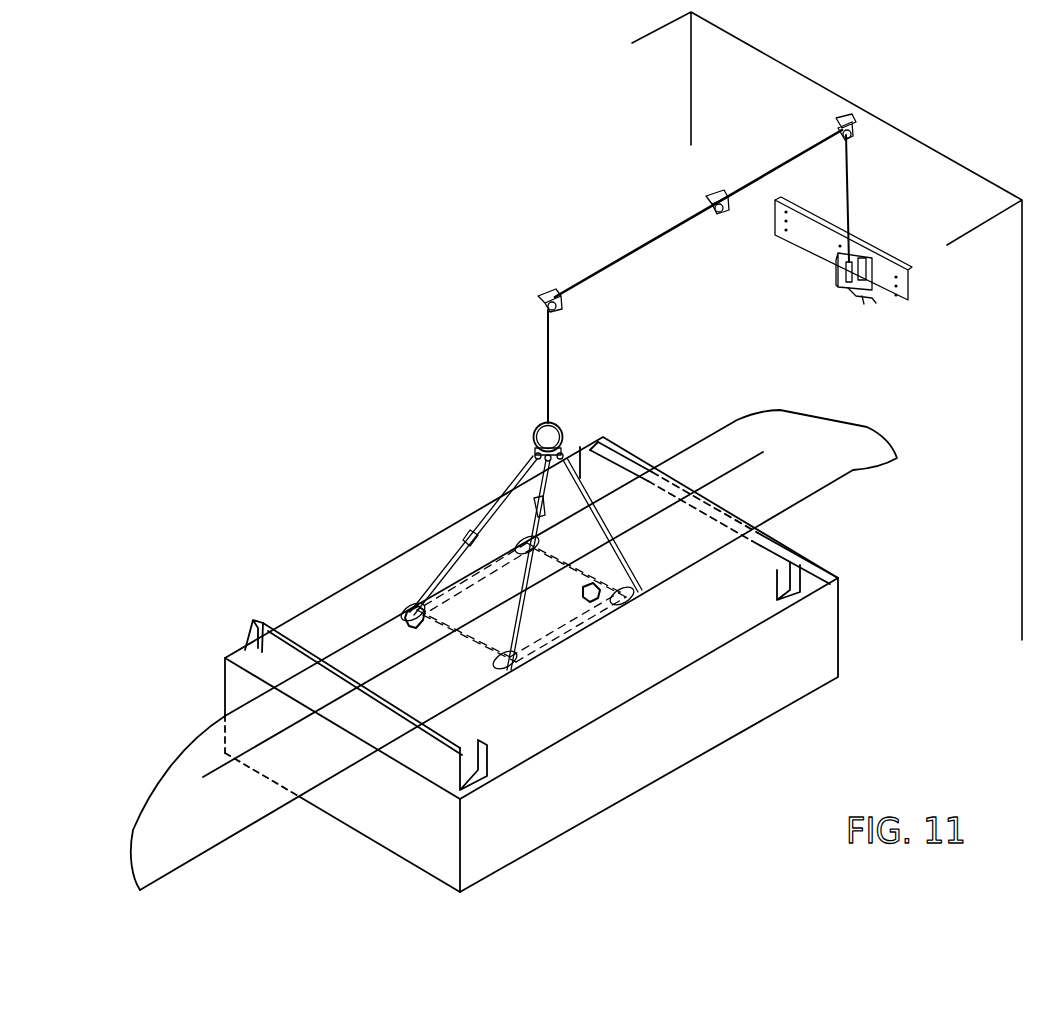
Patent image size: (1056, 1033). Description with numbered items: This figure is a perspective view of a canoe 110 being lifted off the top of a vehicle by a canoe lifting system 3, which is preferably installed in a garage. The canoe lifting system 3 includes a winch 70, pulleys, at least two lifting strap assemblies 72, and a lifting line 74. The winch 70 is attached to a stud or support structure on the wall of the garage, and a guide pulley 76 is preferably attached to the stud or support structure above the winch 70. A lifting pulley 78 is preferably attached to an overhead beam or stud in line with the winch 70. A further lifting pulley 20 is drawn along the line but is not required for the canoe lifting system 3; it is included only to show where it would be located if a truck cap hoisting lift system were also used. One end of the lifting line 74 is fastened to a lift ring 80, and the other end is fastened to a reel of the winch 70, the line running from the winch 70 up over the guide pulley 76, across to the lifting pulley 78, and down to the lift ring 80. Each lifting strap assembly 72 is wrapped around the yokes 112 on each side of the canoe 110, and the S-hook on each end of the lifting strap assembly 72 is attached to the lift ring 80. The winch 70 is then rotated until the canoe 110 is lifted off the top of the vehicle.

The canoe lifting system 3 is at (505, 272).
The lifting pulley 20 is at (722, 195).
The winch 70 is at (867, 287).
The lifting strap assemblies 72 is at (516, 612).
The lifting line 74 is at (655, 237).
The guide pulley 76 is at (838, 118).
The lifting pulley 78 is at (551, 291).
The lift ring 80 is at (556, 425).
The canoe 110 is at (810, 498).
The yokes 112 is at (410, 612).